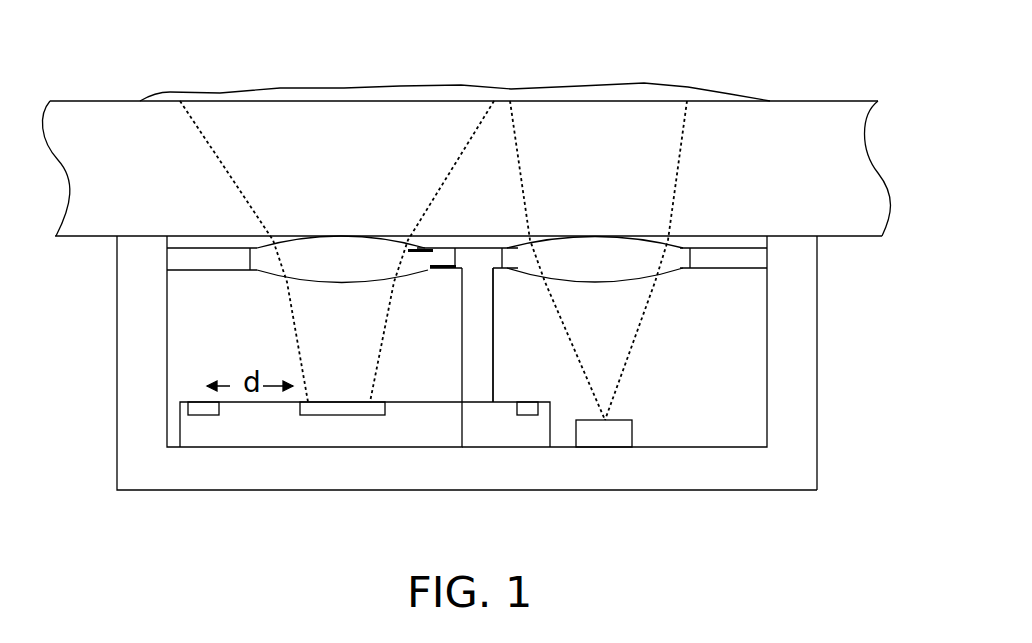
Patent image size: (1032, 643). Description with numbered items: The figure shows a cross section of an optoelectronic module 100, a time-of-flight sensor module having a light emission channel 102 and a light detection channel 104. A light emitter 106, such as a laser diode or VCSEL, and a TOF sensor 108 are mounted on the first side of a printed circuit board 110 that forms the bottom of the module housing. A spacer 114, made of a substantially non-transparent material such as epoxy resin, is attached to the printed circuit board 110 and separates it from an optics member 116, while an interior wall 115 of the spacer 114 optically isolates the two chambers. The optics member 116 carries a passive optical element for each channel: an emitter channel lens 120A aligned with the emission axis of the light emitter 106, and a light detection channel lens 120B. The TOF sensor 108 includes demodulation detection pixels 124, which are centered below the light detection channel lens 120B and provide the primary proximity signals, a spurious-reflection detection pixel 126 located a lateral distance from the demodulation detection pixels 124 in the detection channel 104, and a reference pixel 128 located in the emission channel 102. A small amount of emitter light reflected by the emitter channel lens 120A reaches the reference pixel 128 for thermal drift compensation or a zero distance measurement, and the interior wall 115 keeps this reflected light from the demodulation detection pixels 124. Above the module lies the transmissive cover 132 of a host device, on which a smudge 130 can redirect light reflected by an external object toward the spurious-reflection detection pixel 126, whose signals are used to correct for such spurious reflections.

The optoelectronic module 100 is at (797, 80).
The light emission channel 102 is at (722, 406).
The light detection channel 104 is at (268, 352).
The light emitter 106 is at (616, 440).
The TOF sensor 108 is at (423, 435).
The printed circuit board 110 is at (732, 491).
The spacer 114 is at (818, 403).
The interior wall 115 is at (460, 352).
The optics member 116 is at (737, 270).
The emitter channel lens 120A is at (612, 281).
The light detection channel lens 120B is at (300, 274).
The demodulation detection pixels 124 is at (338, 412).
The spurious-reflection detection pixel 126 is at (205, 415).
The reference pixel 128 is at (528, 412).
The smudge 130 is at (161, 92).
The transmissive cover 132 is at (881, 175).